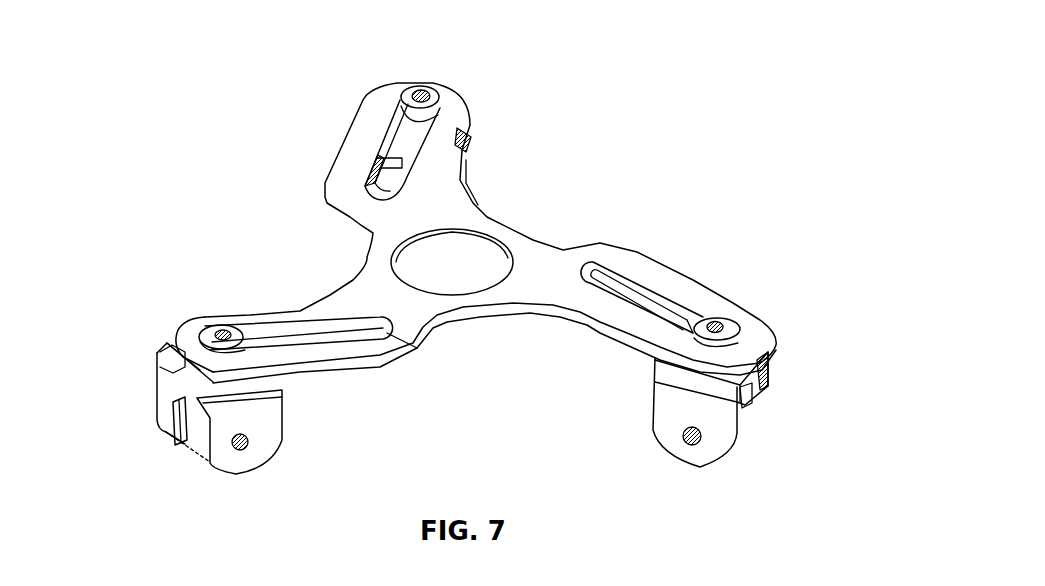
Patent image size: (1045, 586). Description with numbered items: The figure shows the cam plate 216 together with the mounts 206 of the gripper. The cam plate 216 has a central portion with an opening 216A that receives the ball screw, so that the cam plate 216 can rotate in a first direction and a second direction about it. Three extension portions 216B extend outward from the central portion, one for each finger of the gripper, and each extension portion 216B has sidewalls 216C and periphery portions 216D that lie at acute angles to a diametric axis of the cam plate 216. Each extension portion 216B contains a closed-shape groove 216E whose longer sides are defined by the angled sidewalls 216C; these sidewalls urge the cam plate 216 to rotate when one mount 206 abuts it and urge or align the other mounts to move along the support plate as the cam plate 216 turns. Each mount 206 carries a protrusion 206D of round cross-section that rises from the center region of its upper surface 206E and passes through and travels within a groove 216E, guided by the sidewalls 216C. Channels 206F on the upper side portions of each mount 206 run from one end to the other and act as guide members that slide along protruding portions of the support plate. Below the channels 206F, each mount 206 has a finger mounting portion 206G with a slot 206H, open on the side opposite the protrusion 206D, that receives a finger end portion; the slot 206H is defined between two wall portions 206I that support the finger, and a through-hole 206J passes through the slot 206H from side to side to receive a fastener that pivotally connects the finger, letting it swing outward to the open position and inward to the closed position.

The cam plate 216 is at (455, 227).
The opening 216A is at (475, 273).
The extension portions 216B is at (455, 214).
The sidewalls 216C is at (313, 327).
The periphery portions 216D is at (357, 366).
The groove 216E is at (404, 169).
The mount 206 is at (473, 320).
The protrusion 206D is at (484, 118).
The upper surface 206E is at (167, 348).
The channel 206F is at (167, 377).
The finger mounting portion 206G is at (640, 388).
The slot 206H is at (179, 445).
The side wall 206I is at (757, 403).
The through-hole 206J is at (688, 442).